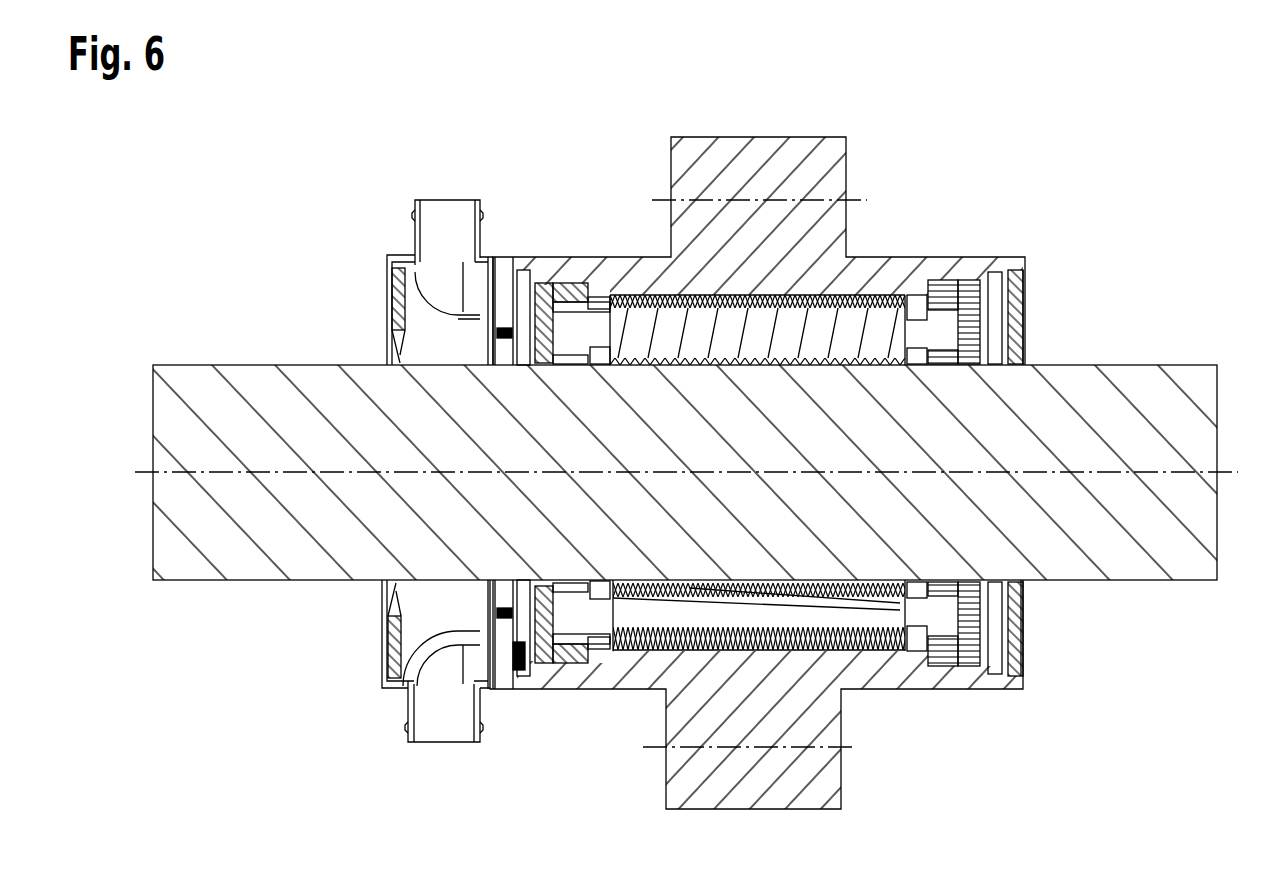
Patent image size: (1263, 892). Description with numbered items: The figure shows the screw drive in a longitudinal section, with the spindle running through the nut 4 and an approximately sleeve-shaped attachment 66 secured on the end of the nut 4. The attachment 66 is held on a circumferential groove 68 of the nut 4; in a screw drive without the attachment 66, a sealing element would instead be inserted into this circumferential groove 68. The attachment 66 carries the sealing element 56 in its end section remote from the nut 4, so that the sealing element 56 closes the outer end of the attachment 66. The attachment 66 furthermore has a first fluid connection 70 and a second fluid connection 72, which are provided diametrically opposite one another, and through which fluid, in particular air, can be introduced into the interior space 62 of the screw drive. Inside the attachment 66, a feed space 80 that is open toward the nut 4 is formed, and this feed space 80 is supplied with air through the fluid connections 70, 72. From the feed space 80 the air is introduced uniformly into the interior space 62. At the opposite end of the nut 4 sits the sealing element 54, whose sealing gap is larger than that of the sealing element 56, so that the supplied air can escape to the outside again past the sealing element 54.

The nut 4 is at (908, 270).
The sealing element 54 is at (1025, 297).
The sealing element 56 is at (387, 302).
The interior space 62 is at (841, 652).
The attachment 66 is at (450, 287).
The circumferential groove 68 is at (490, 270).
The first fluid connection 70 is at (442, 728).
The second fluid connection 72 is at (450, 215).
The feed space 80 is at (443, 660).